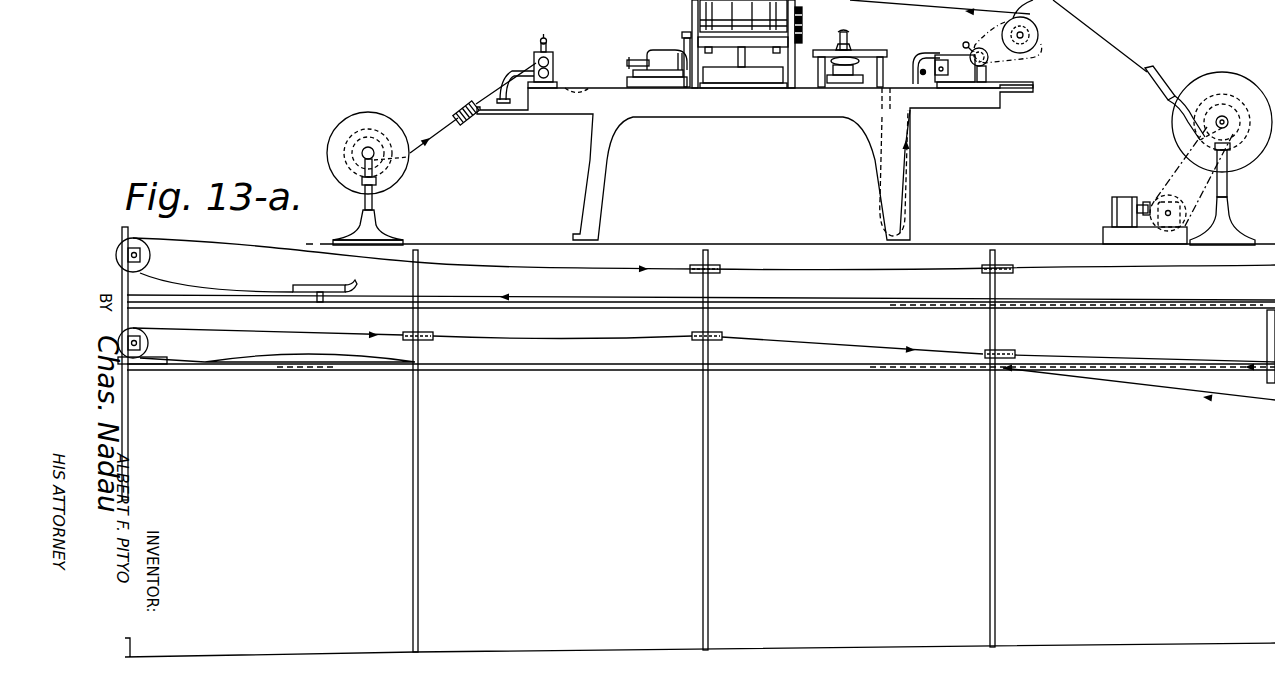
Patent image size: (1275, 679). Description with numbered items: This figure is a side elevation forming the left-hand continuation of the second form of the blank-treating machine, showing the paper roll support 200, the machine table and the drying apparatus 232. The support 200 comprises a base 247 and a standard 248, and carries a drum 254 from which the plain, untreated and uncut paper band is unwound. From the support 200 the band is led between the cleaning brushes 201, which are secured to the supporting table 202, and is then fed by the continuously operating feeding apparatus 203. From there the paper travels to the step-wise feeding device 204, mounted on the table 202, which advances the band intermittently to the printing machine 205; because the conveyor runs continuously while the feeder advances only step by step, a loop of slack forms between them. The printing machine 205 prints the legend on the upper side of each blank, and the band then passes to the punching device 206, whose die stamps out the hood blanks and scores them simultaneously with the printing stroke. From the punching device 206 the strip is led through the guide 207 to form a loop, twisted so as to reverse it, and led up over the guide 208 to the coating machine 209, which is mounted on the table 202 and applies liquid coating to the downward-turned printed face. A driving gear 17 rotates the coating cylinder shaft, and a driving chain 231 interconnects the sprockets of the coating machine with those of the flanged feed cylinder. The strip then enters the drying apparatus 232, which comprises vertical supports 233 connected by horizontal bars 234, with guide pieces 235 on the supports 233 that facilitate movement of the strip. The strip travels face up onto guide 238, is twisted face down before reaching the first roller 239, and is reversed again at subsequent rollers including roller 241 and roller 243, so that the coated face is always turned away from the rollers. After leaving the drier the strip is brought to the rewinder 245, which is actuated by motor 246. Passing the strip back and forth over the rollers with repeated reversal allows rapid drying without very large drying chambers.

The lever 17 is at (813, 0).
The support 200 is at (400, 195).
The cleaning brushes 201 is at (472, 102).
The supporting table 202 is at (733, 107).
The feeding apparatus 203 is at (548, 57).
The step-wise feeding device 204 is at (643, 53).
The printing machine 205 is at (690, 20).
The punching device 206 is at (856, 48).
The guide 207 is at (883, 32).
The guide 208 is at (922, 63).
The coating machine 209 is at (961, 50).
The driving chain 231 is at (1033, 70).
The drying apparatus 232 is at (854, 360).
The vertical supports 233 is at (128, 422).
The horizontal bars 234 is at (523, 307).
The guide pieces 235 is at (720, 267).
The guide 238 is at (462, 0).
The roller 239 is at (143, 347).
The roller 241 is at (68, 0).
The roller 243 is at (118, 257).
The rewinder 245 is at (1227, 180).
The motor 246 is at (1133, 185).
The base 247 is at (403, 242).
The standard 248 is at (372, 207).
The drum 254 is at (353, 123).